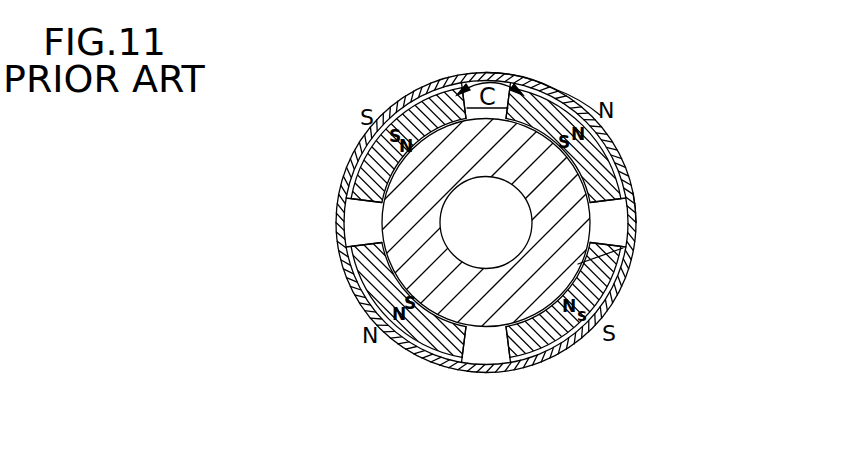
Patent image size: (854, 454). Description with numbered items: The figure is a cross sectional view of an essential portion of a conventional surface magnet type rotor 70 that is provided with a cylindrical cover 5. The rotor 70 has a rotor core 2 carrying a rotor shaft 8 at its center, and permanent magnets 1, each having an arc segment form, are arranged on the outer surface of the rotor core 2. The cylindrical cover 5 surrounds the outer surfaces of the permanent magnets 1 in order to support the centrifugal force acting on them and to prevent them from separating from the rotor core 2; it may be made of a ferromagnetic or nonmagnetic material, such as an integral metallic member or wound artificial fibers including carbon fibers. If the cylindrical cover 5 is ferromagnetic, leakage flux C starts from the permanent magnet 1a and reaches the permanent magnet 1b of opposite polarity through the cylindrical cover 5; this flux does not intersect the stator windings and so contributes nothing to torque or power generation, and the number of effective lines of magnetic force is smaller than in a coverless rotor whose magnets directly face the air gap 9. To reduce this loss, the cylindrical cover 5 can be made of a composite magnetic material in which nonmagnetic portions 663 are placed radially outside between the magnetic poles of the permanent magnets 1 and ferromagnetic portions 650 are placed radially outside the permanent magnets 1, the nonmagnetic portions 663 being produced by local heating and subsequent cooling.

The surface magnet type rotor 70 is at (549, 72).
The cylindrical cover 5 is at (584, 98).
The ferromagnetic portions 650 is at (613, 145).
The nonmagnetic portions 663 is at (637, 218).
The permanent magnet 1a is at (621, 172).
The permanent magnet 1b is at (449, 93).
The permanent magnets 1 is at (354, 279).
The rotor core 2 is at (620, 283).
The rotor shaft 8 is at (507, 263).
The air gap 9 is at (333, 178).